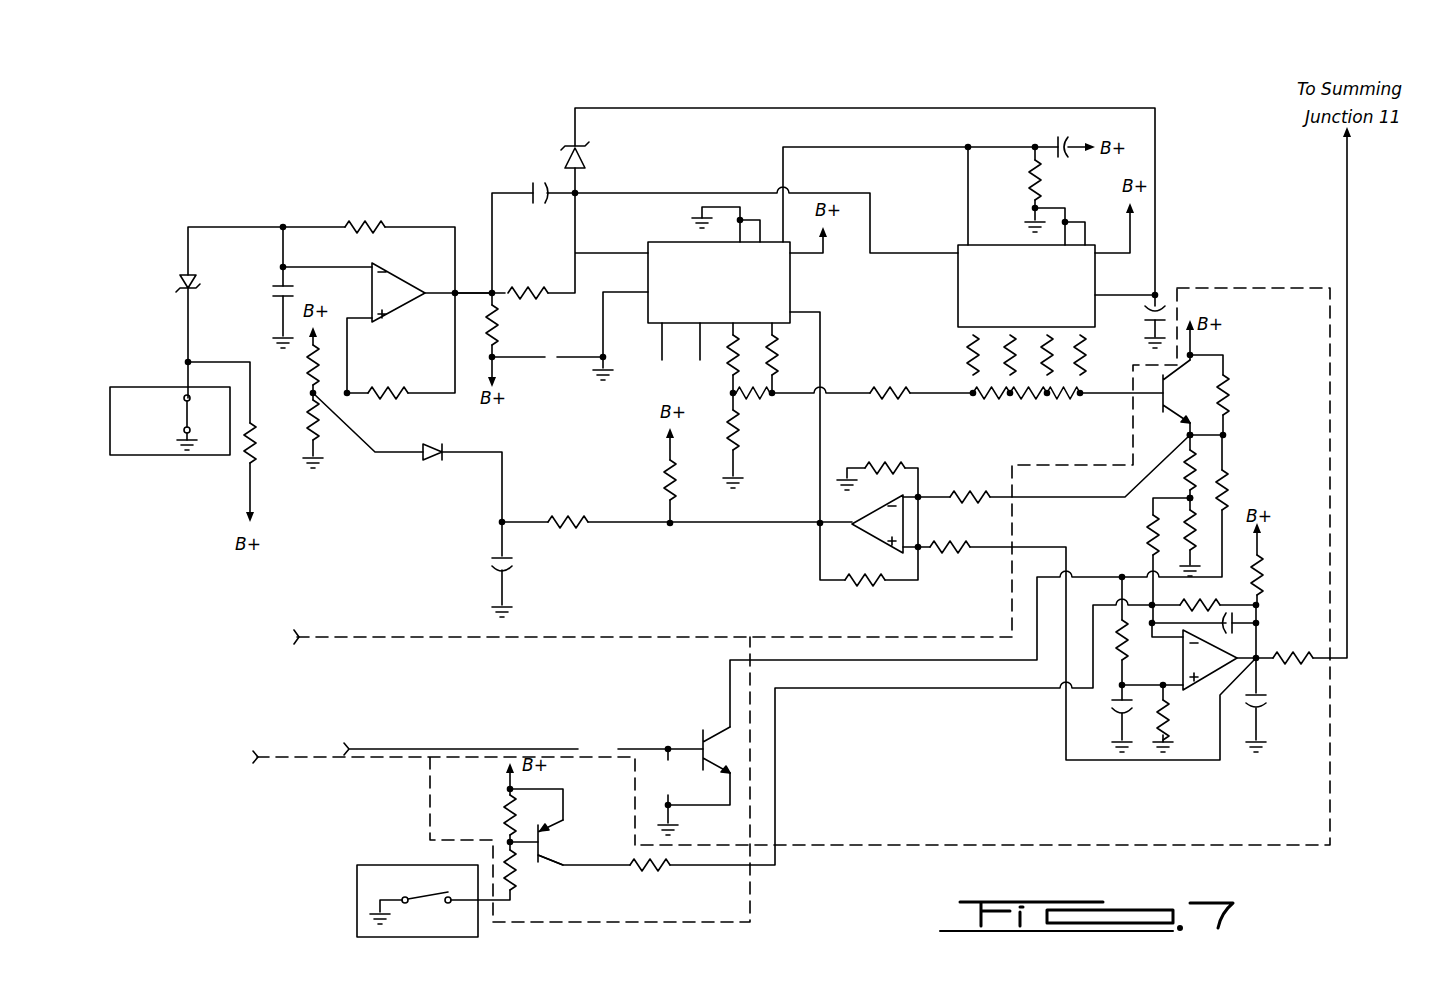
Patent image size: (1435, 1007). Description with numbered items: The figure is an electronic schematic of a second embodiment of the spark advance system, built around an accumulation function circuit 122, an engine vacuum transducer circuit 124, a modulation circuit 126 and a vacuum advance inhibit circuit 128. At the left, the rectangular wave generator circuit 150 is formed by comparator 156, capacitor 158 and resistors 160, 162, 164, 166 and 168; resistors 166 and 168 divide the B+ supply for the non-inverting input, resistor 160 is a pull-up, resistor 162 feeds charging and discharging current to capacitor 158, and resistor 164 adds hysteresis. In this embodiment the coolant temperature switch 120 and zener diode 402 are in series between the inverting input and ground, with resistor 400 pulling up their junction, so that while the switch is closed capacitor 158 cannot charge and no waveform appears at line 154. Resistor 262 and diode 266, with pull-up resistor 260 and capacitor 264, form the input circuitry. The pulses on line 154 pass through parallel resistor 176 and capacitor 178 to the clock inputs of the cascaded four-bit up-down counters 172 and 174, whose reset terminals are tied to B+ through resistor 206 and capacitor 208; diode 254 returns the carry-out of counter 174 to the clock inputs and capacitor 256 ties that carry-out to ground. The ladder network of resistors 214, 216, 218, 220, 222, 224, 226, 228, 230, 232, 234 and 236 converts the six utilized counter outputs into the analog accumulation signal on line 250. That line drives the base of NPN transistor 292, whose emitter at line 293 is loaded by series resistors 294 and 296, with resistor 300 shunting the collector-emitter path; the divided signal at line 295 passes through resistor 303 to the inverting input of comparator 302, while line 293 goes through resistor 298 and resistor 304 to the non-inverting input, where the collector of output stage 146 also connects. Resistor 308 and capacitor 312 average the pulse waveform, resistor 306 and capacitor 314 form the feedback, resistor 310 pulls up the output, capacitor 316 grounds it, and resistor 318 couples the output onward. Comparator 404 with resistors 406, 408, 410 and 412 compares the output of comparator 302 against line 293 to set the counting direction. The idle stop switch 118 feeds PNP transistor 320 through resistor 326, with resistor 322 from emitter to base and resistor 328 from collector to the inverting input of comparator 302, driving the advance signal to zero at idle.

The rectangular wave generator circuit 150 is at (230, 184).
The zener diode 402 is at (178, 280).
The resistor 162 is at (370, 220).
The capacitor 158 is at (275, 289).
The voltage type comparator 156 is at (401, 277).
The line 154 is at (472, 287).
The resistor 166 is at (310, 370).
The resistor 164 is at (392, 392).
The resistor 400 is at (256, 452).
The resistor 168 is at (320, 440).
The diode 266 is at (430, 463).
The capacitor 264 is at (493, 560).
The resistor 262 is at (560, 513).
The resistor 260 is at (665, 470).
The capacitor 178 is at (525, 182).
The diode 254 is at (592, 165).
The resistor 176 is at (527, 287).
The resistor 160 is at (498, 340).
The 4-bit up-down counter 172 is at (640, 328).
The 4-bit up-down counter 174 is at (958, 242).
The resistor 214 is at (732, 370).
The resistor 220 is at (774, 385).
The resistor 218 is at (747, 395).
The resistor 216 is at (738, 430).
The capacitor 208 is at (1058, 140).
The resistor 206 is at (1045, 175).
The accumulation function circuit 122 is at (1205, 195).
The resistor 222 is at (882, 393).
The resistor 224 is at (970, 344).
The resistor 228 is at (1008, 344).
The resistor 232 is at (1052, 357).
The resistor 236 is at (1083, 367).
The resistor 226 is at (973, 400).
The resistor 230 is at (1025, 400).
The resistor 234 is at (1067, 400).
The line 250 is at (1117, 400).
The capacitor 256 is at (1172, 320).
The NPN transistor 292 is at (1176, 412).
The resistor 300 is at (1232, 397).
The line 293 is at (1185, 436).
The resistor 294 is at (1200, 472).
The line 295 is at (1204, 496).
The resistor 296 is at (1185, 529).
The resistor 298 is at (1231, 511).
The resistor 303 is at (1148, 528).
The resistor 310 is at (1262, 571).
The resistor 306 is at (1230, 607).
The capacitor 314 is at (1239, 623).
The resistor 318 is at (1289, 658).
The capacitor 316 is at (1265, 710).
The comparator 302 is at (1180, 659).
The resistor 304 is at (1120, 617).
The capacitor 312 is at (1120, 713).
The resistor 308 is at (1167, 717).
The comparator 404 is at (866, 538).
The resistor 412 is at (878, 467).
The resistor 408 is at (966, 497).
The resistor 406 is at (950, 549).
The resistor 410 is at (855, 580).
The output stage 146 is at (716, 722).
The PNP transistor 320 is at (548, 840).
The resistor 322 is at (505, 817).
The resistor 326 is at (514, 880).
The resistor 328 is at (648, 870).
The coolant temperature switch 120 is at (148, 455).
The idle stop switch 118 is at (357, 878).
The engine vacuum transducer circuit 124 is at (297, 645).
The modulation circuit 126 is at (1233, 852).
The vacuum advance inhibit circuit 128 is at (430, 791).